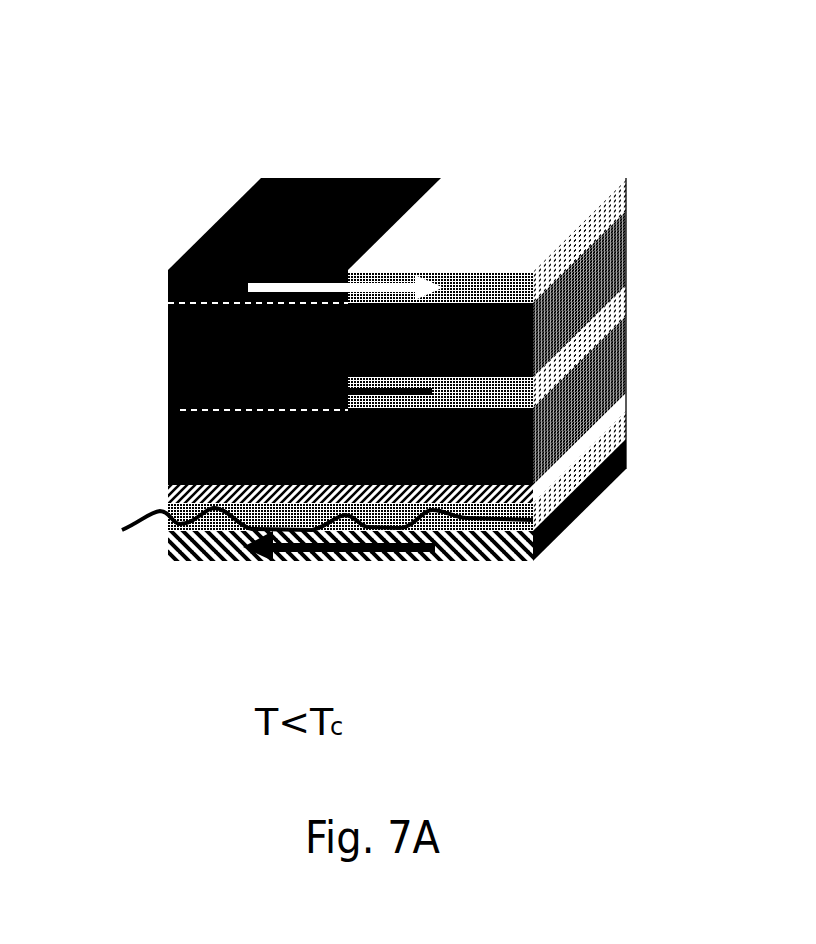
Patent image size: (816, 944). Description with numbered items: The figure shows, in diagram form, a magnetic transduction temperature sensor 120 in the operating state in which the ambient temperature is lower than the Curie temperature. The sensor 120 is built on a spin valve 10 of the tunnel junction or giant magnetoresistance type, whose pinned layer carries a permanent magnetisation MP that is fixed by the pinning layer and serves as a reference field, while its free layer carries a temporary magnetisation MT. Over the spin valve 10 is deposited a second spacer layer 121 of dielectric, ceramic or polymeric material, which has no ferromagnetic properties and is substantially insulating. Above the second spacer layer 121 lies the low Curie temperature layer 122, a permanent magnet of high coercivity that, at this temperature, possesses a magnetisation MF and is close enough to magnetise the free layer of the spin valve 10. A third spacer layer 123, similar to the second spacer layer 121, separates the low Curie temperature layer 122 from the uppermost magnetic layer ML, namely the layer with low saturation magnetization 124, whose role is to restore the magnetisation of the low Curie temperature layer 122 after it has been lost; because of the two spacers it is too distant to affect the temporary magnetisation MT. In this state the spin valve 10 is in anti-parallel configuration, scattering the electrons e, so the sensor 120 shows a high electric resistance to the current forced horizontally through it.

The temperature sensor 120 is at (266, 150).
The magnetic layer ML is at (323, 175).
The layer with low saturation magnetization 124 is at (475, 188).
The third spacer layer 123 is at (628, 260).
The low Curie temperature layer 122 is at (620, 303).
The second spacer layer 121 is at (607, 360).
The spin valve 10 is at (627, 384).
The electrons e is at (616, 361).
The magnetisation of the low Curie temperature layer MF is at (467, 470).
The permanent magnetisation MP is at (330, 537).
The temporary magnetisation MT is at (394, 495).